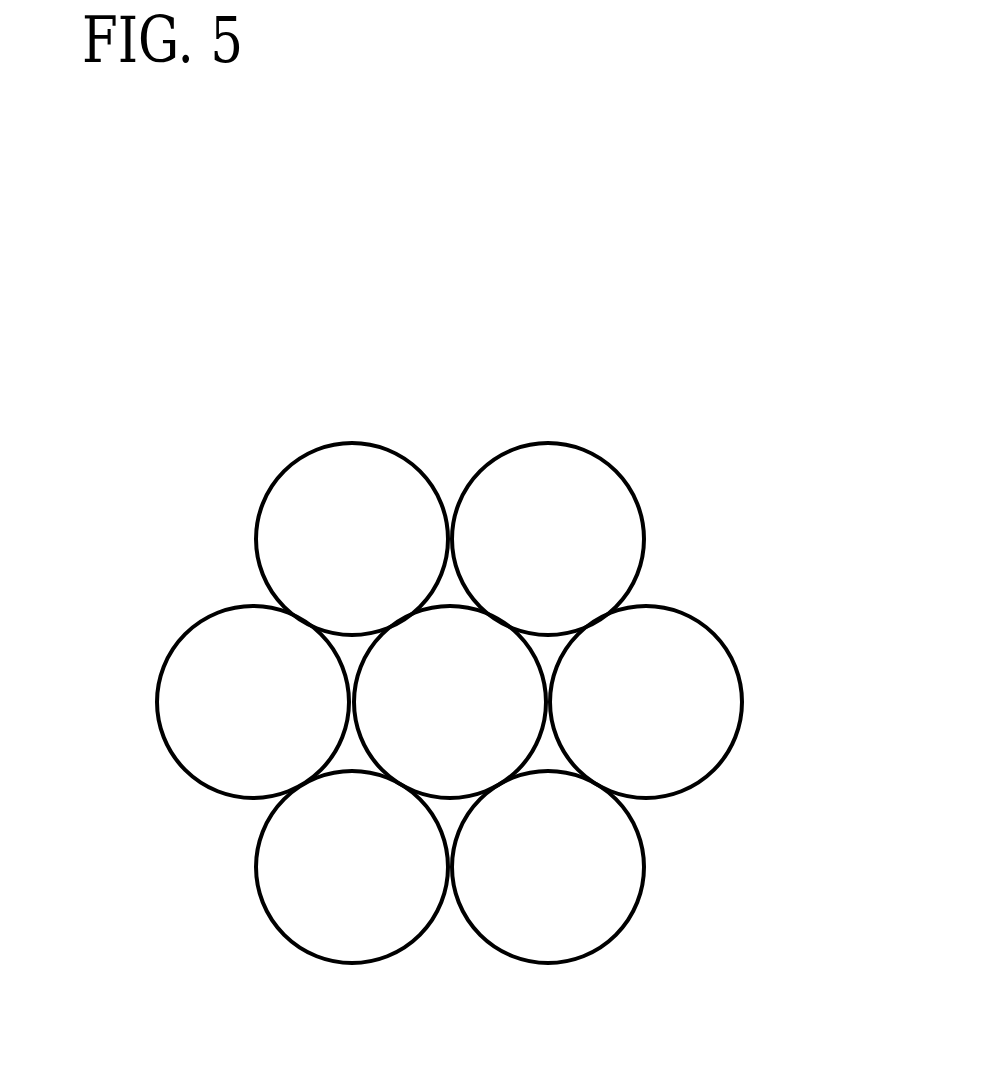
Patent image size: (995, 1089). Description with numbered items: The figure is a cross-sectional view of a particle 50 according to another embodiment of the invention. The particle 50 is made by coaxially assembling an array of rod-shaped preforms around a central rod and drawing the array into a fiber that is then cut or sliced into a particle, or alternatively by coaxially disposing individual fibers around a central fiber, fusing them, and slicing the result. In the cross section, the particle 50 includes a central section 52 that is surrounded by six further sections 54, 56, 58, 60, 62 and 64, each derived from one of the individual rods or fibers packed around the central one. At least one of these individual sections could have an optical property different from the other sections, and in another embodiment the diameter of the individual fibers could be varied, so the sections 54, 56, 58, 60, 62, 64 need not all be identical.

The particle 50 is at (688, 420).
The central section 52 is at (493, 687).
The section 54 is at (708, 693).
The section 56 is at (613, 888).
The section 58 is at (340, 902).
The section 60 is at (205, 700).
The section 62 is at (305, 518).
The section 64 is at (527, 480).